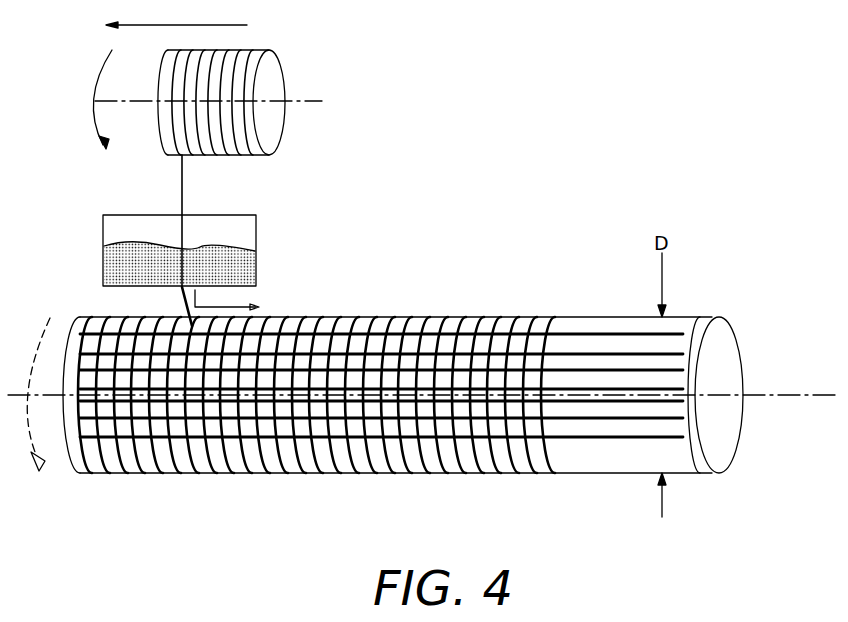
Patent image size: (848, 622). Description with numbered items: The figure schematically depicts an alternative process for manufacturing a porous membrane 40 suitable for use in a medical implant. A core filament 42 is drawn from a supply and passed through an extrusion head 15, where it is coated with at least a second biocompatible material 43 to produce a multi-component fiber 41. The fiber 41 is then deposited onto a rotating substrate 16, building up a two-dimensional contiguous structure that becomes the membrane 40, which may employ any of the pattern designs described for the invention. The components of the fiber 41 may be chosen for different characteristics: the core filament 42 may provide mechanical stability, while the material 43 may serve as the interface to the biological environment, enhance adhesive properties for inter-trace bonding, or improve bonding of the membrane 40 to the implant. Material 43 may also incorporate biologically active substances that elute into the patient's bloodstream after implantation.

The extrusion head 15 is at (103, 236).
The substrate 16 is at (718, 431).
The membrane 40 is at (149, 438).
The multi-component fiber 41 is at (180, 299).
The core filament 42 is at (240, 70).
The second biocompatible material 43 is at (238, 258).